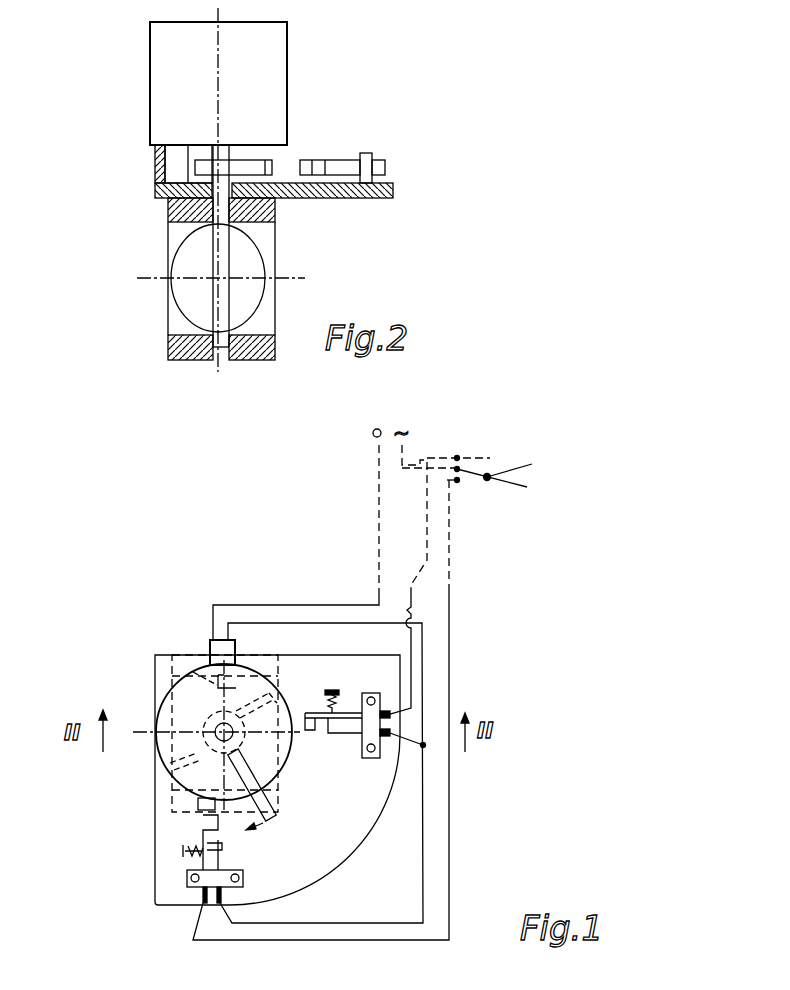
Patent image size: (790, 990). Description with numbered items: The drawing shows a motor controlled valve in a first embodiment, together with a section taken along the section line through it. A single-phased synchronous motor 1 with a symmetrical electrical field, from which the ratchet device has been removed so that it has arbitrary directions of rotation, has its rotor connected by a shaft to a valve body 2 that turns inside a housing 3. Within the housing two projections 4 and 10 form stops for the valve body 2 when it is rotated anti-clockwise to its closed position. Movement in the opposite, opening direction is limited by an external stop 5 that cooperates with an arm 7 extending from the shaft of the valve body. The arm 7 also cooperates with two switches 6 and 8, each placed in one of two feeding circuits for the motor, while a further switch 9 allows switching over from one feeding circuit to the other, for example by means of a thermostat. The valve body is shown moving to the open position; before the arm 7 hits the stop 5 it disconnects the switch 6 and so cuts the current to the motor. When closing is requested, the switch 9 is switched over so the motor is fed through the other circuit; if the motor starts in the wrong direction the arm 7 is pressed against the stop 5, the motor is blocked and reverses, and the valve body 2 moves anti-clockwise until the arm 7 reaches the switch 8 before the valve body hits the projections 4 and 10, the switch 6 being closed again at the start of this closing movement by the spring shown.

In FIG. 2, the single-phased synchronous motor 1 is at (178, 66).
In FIG. 1, the single-phased synchronous motor 1 is at (183, 723).
In FIG. 2, the valve body 2 is at (195, 257).
In FIG. 1, the valve body 2 is at (180, 757).
In FIG. 2, the housing 3 is at (185, 346).
In FIG. 1, the projection 4 is at (215, 687).
In FIG. 1, the external stop 5 is at (210, 807).
In FIG. 1, the switch 6 is at (190, 881).
In FIG. 2, the arm 7 is at (258, 160).
In FIG. 1, the arm 7 is at (277, 818).
In FIG. 2, the switch 8 is at (390, 168).
In FIG. 1, the switch 8 is at (370, 727).
In FIG. 1, the switch 9 is at (486, 467).
In FIG. 1, the projection 10 is at (233, 786).